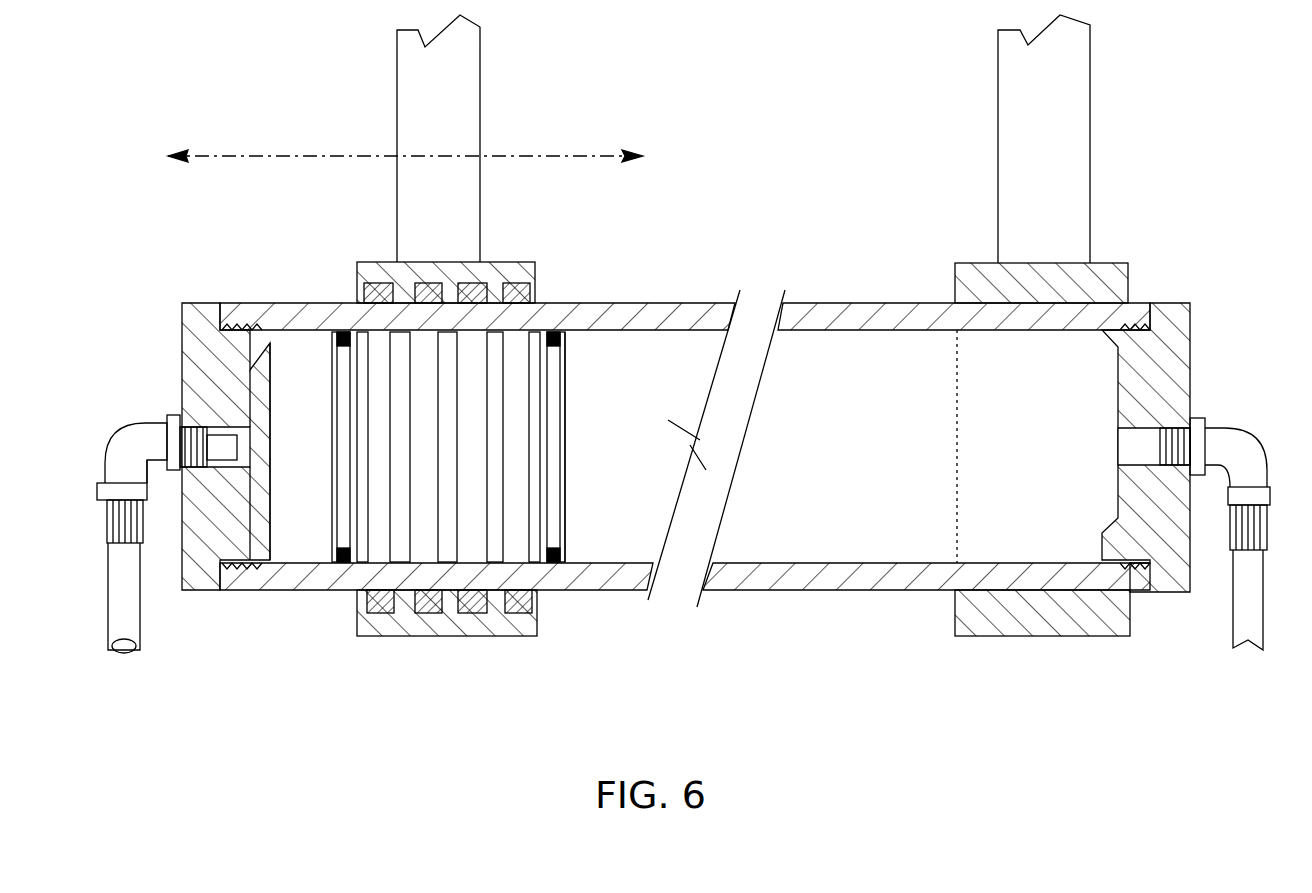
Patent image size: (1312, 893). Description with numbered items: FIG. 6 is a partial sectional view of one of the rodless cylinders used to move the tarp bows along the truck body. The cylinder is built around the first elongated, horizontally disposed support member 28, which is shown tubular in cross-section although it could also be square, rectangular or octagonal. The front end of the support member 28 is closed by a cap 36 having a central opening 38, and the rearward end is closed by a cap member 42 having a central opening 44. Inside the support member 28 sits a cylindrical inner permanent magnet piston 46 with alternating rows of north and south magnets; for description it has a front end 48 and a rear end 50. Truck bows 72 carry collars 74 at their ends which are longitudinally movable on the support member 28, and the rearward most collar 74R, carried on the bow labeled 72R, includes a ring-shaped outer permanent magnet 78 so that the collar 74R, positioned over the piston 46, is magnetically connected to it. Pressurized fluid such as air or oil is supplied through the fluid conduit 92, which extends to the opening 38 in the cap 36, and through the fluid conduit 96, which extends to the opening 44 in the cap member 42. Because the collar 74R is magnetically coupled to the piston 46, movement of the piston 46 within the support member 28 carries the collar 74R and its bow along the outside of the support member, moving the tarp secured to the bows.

The support member 28 is at (877, 298).
The cap 36 is at (1192, 345).
The central opening 38 is at (1116, 452).
The cap member 42 is at (182, 345).
The central opening 44 is at (262, 438).
The inner permanent magnet piston 46 is at (492, 426).
The front end 48 is at (568, 492).
The rear end 50 is at (330, 432).
The truck bows 72 is at (998, 104).
The rod 72R is at (484, 208).
The collars 74 is at (1128, 268).
The rearward most collar 74R is at (535, 262).
The ring-shaped outer permanent magnet 78 is at (357, 300).
The fluid conduit 92 is at (1268, 465).
The fluid conduit 96 is at (140, 622).